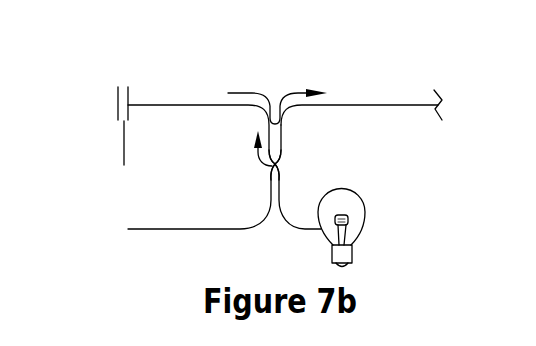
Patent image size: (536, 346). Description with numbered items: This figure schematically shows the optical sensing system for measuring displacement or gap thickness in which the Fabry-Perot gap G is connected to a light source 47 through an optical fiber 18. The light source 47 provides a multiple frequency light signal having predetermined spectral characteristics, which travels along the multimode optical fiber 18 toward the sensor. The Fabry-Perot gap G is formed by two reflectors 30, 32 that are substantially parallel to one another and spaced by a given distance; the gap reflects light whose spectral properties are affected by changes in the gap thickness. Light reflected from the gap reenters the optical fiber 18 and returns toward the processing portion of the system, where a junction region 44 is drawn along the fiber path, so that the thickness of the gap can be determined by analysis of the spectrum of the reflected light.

The optical fiber 18 is at (164, 105).
The reflector 32 is at (118, 113).
The reflector 30 is at (129, 113).
The constriction (pinch) in conductor 44 is at (281, 166).
The light source 47 is at (365, 200).